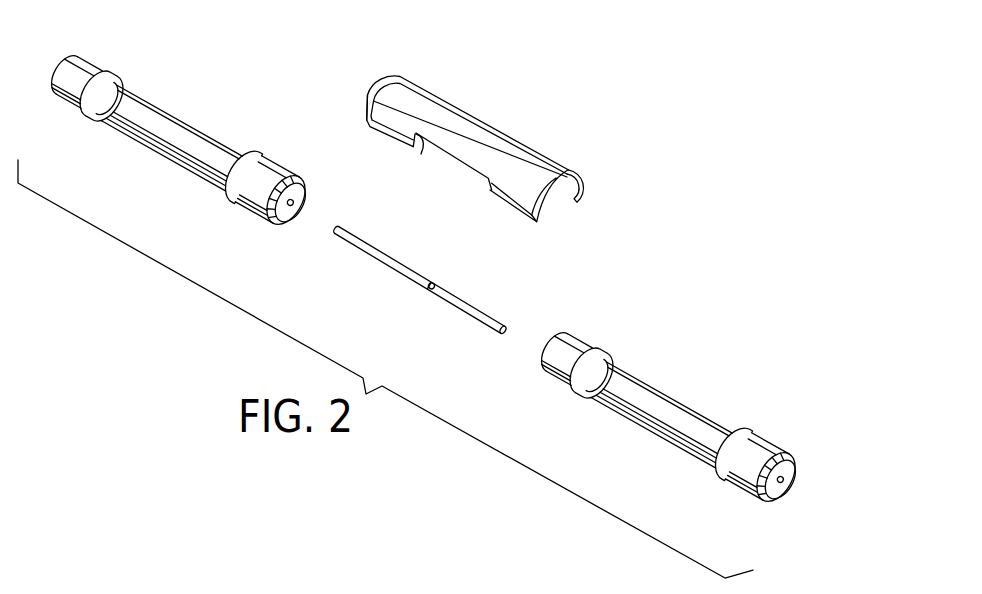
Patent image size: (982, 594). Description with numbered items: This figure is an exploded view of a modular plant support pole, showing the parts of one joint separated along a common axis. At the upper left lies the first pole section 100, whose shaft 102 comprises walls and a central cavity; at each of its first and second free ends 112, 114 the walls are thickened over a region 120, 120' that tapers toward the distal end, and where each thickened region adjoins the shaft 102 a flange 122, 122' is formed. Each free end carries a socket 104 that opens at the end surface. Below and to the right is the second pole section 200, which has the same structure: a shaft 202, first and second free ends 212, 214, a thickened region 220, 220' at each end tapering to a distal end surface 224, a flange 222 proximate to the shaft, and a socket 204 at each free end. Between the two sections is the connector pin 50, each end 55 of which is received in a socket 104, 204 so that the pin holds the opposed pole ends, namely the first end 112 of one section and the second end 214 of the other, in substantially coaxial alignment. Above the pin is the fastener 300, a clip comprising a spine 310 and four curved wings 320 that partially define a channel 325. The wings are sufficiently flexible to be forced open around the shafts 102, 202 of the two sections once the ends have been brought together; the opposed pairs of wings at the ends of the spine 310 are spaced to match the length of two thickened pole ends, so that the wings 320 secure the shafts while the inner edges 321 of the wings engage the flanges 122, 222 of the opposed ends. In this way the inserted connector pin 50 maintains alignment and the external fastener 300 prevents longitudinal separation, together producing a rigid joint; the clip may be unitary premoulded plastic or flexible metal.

The connector pin 50 is at (377, 263).
The end of connector pin 55 is at (333, 232).
The first pole section 100 is at (187, 125).
The shaft 102 is at (152, 160).
The socket 104 is at (292, 208).
The first free end 112 is at (303, 181).
The second free end 114 is at (65, 61).
The thickened region 120 is at (66, 116).
The thickened region 120' is at (241, 209).
The flange 122 is at (141, 91).
The flange 122' is at (257, 151).
The second pole section 200 is at (677, 402).
The shaft 202 is at (633, 425).
The socket 204 is at (784, 483).
The first free end 212 is at (787, 462).
The second free end 214 is at (559, 332).
The thickened region 220 is at (543, 377).
The thickened region 220' is at (754, 444).
The flange 222 is at (606, 359).
The distal end surface 224 is at (773, 500).
The fastener 300 is at (541, 124).
The spine 310 is at (460, 120).
The curved wing 320 is at (585, 195).
The inner edge of wing 321 is at (422, 151).
The channel 325 is at (450, 170).